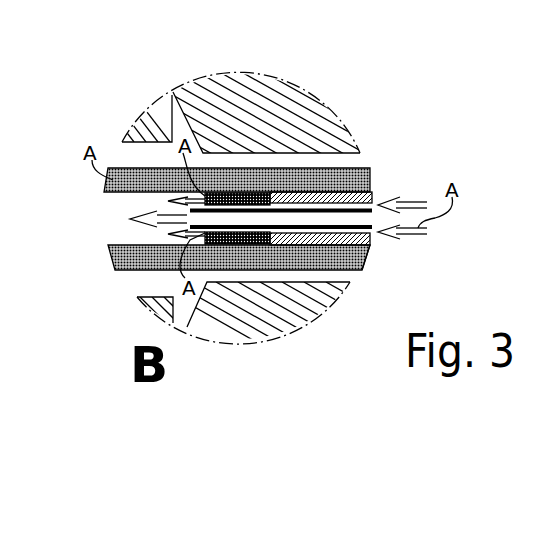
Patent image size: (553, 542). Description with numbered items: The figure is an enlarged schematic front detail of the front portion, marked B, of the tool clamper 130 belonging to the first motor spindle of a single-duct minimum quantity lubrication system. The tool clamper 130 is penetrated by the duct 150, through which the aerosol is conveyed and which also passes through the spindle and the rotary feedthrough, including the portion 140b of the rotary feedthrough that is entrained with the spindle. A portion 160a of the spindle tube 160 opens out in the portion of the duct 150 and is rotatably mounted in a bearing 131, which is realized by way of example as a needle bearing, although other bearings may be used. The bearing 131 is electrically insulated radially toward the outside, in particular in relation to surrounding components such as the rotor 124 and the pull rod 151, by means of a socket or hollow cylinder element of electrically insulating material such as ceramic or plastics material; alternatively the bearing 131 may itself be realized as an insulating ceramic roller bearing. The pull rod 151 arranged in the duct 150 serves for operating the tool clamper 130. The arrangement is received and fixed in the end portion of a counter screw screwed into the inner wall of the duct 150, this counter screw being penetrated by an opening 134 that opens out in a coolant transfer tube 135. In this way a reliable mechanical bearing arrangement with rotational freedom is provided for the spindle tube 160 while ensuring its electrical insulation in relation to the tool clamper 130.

The rotor 124 is at (267, 117).
The tool clamper 130 is at (100, 265).
The bearing 131 is at (255, 193).
The opening 134 is at (215, 217).
The coolant transfer tube 135 is at (163, 212).
The entrained portion of the rotary feedthrough 140b is at (372, 192).
The duct 150 is at (392, 152).
The pull rod 151 is at (362, 270).
The spindle tube 160 is at (363, 250).
The portion of the spindle tube 160a is at (328, 294).